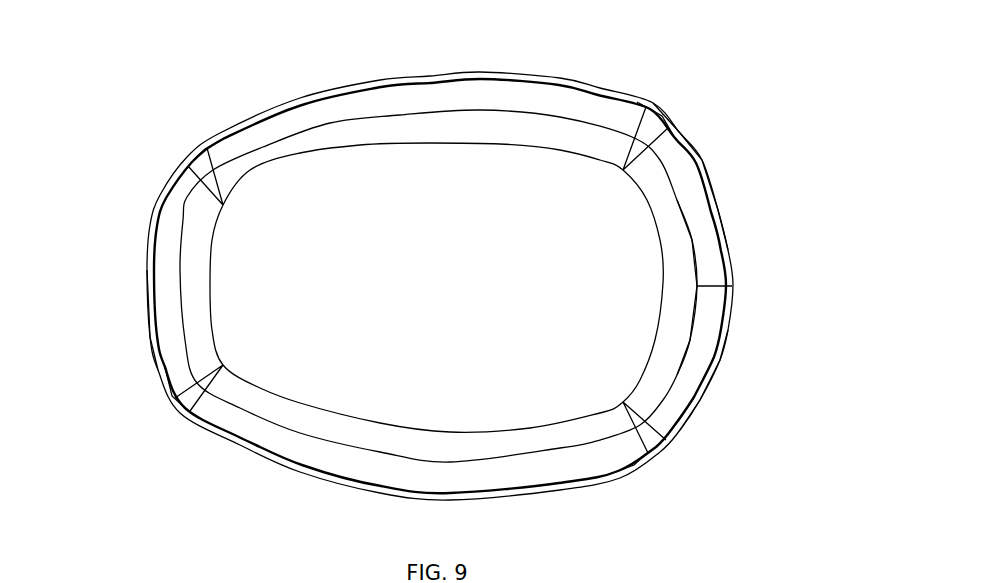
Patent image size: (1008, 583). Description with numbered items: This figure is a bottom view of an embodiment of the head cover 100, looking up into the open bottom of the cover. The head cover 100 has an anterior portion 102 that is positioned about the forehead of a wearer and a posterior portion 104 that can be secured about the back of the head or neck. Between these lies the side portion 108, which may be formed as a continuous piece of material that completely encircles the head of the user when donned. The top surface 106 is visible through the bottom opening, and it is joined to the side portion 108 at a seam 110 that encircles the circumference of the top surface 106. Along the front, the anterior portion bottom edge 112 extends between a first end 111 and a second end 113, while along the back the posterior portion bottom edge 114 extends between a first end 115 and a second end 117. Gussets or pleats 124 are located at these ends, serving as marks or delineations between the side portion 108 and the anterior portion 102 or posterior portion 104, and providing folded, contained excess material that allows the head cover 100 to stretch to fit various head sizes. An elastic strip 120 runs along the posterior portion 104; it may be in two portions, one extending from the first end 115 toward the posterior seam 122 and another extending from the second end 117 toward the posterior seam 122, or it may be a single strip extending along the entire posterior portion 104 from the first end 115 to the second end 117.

The head cover 100 is at (740, 148).
The anterior portion 102 is at (148, 255).
The posterior portion 104 is at (702, 248).
The top surface 106 is at (496, 217).
The side portion 108 is at (400, 78).
The seam 110 is at (428, 145).
The first end of the anterior portion bottom edge 111 is at (180, 395).
The anterior portion bottom edge 112 is at (145, 317).
The second end of the anterior portion bottom edge 113 is at (175, 173).
The posterior portion bottom edge 114 is at (722, 357).
The first end of the posterior portion bottom edge 115 is at (648, 467).
The second end of the posterior portion bottom edge 117 is at (652, 105).
The elastic strip 120 is at (662, 102).
The posterior seam 122 is at (702, 290).
The gussets or pleats 124 is at (195, 172).